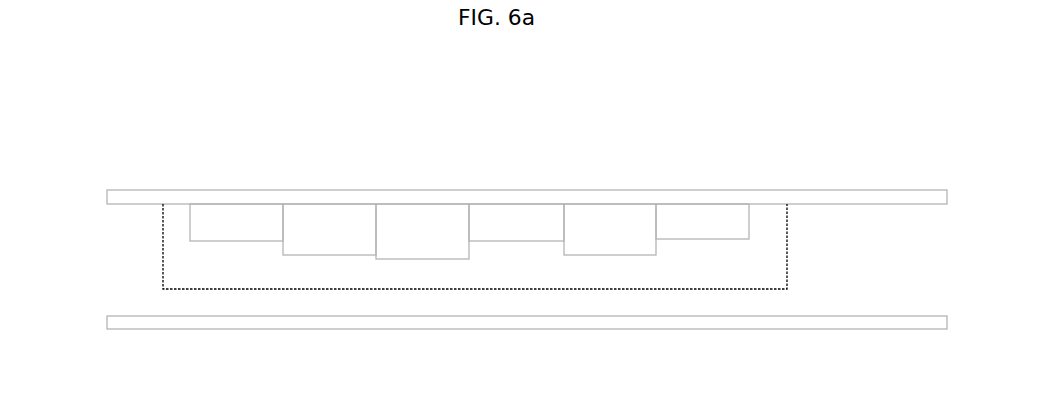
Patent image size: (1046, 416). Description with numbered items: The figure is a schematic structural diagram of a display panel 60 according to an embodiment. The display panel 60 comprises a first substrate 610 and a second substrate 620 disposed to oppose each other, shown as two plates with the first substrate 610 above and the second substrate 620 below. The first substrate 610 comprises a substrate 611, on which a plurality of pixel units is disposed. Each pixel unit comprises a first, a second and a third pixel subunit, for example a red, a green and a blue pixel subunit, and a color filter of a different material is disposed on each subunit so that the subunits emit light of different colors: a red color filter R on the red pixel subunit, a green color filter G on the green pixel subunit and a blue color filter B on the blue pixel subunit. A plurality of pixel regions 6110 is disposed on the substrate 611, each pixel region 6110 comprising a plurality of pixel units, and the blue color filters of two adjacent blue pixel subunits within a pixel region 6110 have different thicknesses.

The display panel 60 is at (548, 96).
The first substrate 610 is at (146, 261).
The substrate 611 is at (748, 198).
The pixel region 6110 is at (772, 264).
The second substrate 620 is at (708, 322).